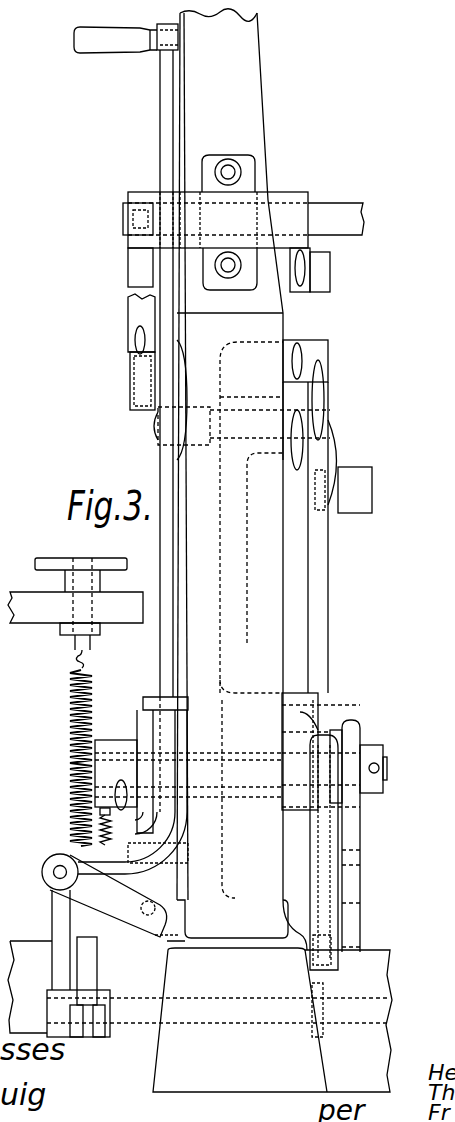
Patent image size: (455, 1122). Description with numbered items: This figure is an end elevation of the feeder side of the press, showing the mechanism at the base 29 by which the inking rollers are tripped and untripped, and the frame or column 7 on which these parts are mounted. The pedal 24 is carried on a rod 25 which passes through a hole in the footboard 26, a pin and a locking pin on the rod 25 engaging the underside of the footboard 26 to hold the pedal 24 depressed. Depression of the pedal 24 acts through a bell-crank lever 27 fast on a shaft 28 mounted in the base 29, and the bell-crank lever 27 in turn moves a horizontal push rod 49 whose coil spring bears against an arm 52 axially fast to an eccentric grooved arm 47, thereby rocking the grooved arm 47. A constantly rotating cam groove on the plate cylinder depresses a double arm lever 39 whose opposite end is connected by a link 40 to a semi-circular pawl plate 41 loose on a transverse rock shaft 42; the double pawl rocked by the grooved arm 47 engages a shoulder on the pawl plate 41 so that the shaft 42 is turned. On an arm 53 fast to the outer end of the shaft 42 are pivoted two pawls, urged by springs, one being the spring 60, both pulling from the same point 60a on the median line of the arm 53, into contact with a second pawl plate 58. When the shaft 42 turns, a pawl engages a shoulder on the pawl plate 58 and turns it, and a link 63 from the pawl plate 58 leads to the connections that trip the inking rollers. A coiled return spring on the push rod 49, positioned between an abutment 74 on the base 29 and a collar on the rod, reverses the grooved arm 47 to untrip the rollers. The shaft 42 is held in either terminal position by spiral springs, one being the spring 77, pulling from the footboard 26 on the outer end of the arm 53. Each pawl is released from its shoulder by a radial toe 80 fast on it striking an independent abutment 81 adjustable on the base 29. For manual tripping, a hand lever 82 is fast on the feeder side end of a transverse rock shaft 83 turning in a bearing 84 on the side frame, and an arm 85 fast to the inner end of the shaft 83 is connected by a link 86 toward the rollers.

The column 7 is at (242, 479).
The pedal 24 is at (78, 560).
The rod 25 is at (88, 942).
The footboard 26 is at (42, 600).
The bell-crank lever 27 is at (53, 925).
The shaft 28 is at (47, 1012).
The base 29 is at (160, 1060).
The double arm lever 39 is at (330, 472).
The link 40 is at (323, 533).
The semi-circular pawl plate 41 is at (355, 736).
The transverse rock shaft 42 is at (388, 770).
The eccentric grooved arm 47 is at (313, 908).
The horizontal push rod 49 is at (44, 873).
The arm 52 is at (158, 856).
The arm 53 is at (107, 745).
The second pawl plate 58 is at (138, 712).
The spring 60 is at (96, 830).
The point 60a is at (70, 802).
The link 63 is at (160, 456).
The abutment 74 is at (120, 918).
The spiral spring 77 is at (70, 692).
The radial toe 80 is at (156, 947).
The abutment 81 is at (153, 903).
The hand lever 82 is at (161, 128).
The transverse rock shaft 83 is at (312, 210).
The bearing 84 is at (227, 156).
The arm 85 is at (304, 288).
The link 86 is at (320, 286).